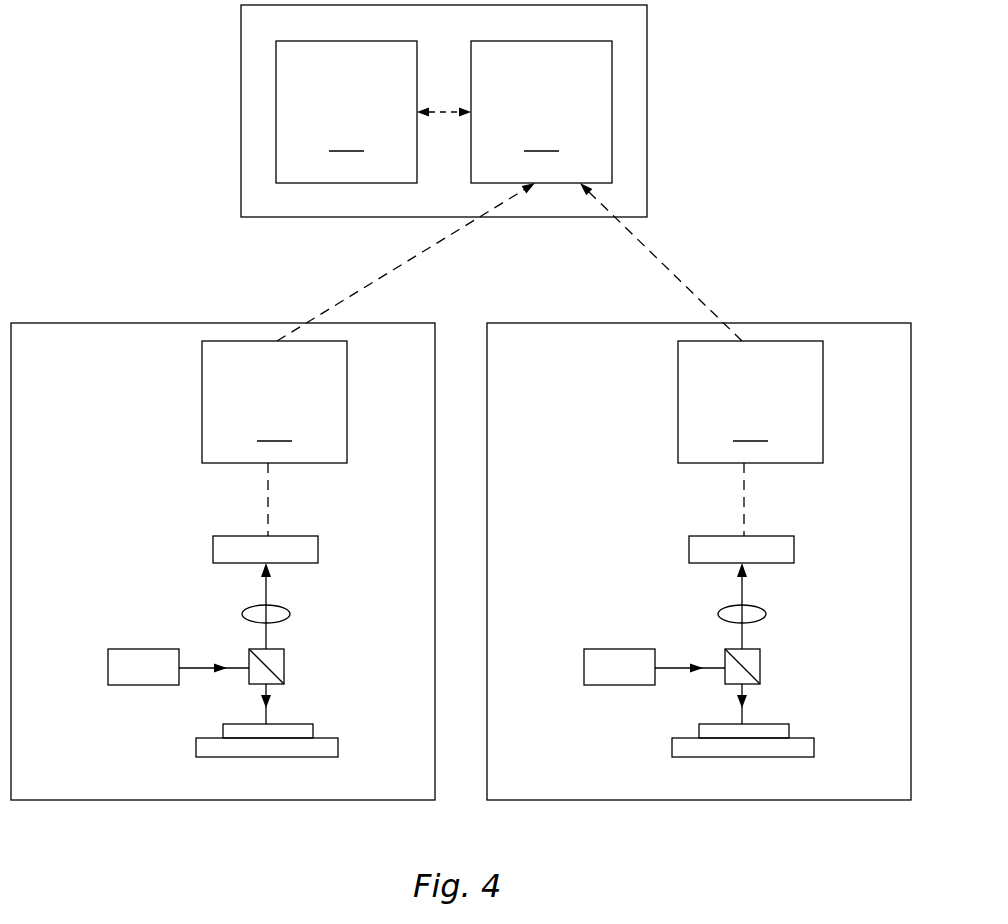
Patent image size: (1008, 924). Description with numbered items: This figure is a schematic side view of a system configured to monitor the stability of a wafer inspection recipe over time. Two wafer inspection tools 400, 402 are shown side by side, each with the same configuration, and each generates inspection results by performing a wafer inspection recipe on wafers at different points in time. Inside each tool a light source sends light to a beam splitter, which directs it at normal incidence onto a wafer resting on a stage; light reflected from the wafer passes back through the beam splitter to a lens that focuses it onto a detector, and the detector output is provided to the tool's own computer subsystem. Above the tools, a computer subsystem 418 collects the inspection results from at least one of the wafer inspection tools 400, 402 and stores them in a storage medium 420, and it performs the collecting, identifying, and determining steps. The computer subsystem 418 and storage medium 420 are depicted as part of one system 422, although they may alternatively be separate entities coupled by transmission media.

The wafer inspection tool 400 is at (125, 323).
The wafer inspection tool 402 is at (823, 323).
The computer subsystem 418 is at (541, 112).
The storage medium 420 is at (346, 112).
The system 422 is at (647, 94).